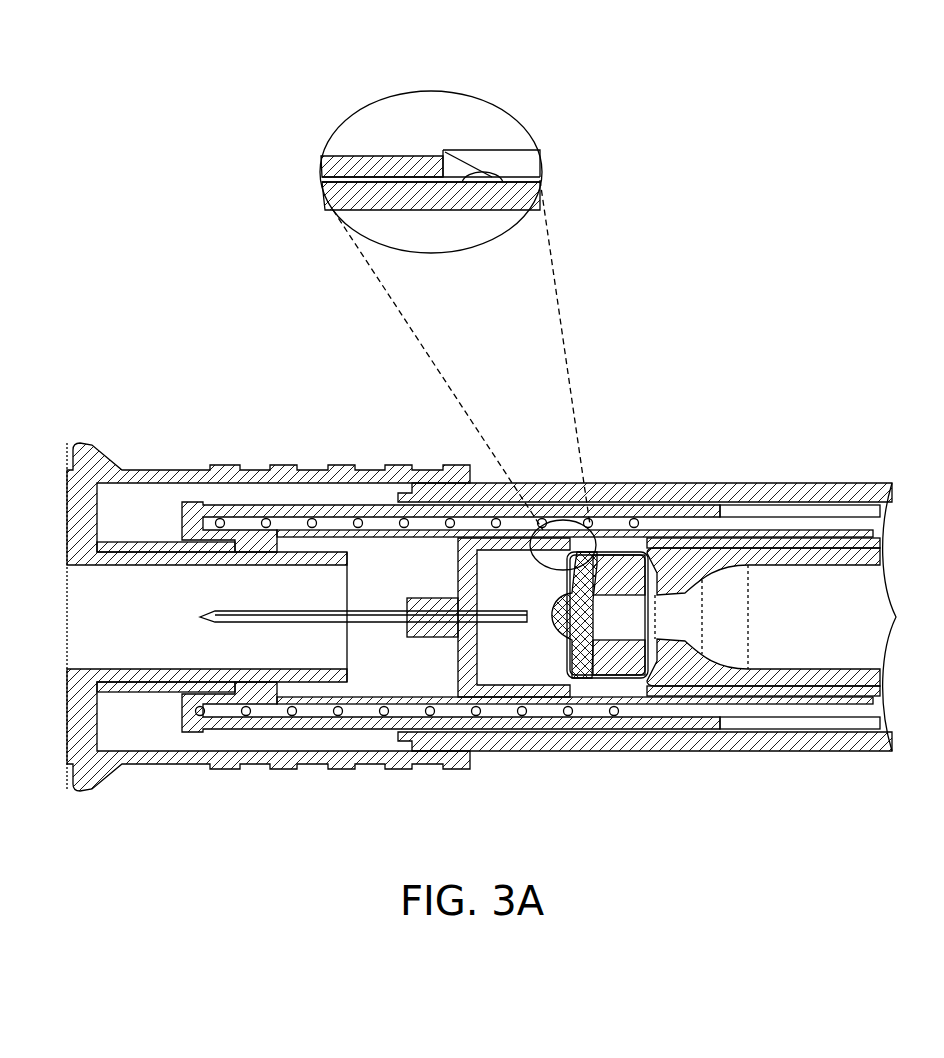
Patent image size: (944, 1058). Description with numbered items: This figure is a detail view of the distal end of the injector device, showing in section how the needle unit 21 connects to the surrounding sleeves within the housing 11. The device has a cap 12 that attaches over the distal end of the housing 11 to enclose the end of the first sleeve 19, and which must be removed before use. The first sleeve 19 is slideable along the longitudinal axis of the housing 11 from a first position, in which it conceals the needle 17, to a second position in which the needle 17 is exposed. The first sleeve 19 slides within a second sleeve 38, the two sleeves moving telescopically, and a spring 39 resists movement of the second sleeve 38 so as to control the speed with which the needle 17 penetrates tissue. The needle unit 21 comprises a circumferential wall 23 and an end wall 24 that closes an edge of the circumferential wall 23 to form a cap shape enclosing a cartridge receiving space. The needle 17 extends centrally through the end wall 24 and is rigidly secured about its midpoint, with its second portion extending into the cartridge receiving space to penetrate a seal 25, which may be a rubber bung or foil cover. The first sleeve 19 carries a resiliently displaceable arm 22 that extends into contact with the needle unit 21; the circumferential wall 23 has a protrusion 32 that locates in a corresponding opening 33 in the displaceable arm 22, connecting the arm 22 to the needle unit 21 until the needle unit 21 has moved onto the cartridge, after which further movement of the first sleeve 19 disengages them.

The housing 11 is at (733, 483).
The cap 12 is at (200, 766).
The needle 17 is at (375, 624).
The sleeve 19 is at (167, 694).
The needle unit 21 is at (467, 678).
The displaceable arm 22 is at (640, 504).
The circumferential wall 23 is at (485, 549).
The end wall 24 is at (458, 578).
The seal 25 is at (567, 622).
The protrusion 32 is at (487, 180).
The opening 33 is at (503, 160).
The second sleeve 38 is at (263, 505).
The spring 39 is at (317, 518).